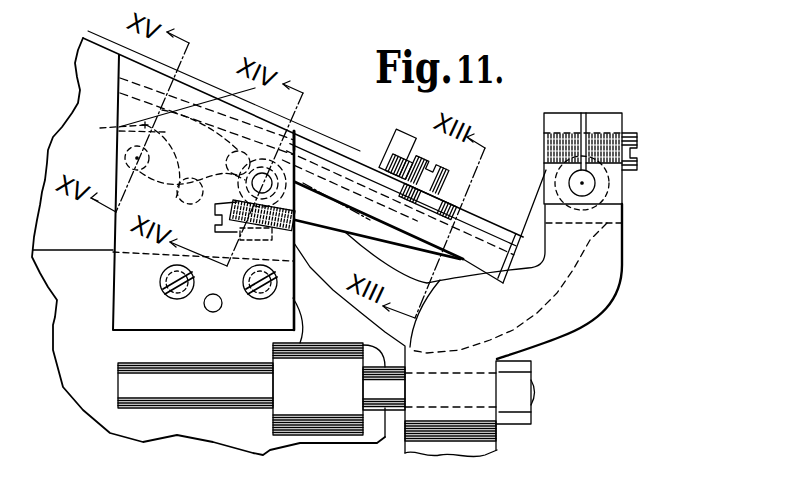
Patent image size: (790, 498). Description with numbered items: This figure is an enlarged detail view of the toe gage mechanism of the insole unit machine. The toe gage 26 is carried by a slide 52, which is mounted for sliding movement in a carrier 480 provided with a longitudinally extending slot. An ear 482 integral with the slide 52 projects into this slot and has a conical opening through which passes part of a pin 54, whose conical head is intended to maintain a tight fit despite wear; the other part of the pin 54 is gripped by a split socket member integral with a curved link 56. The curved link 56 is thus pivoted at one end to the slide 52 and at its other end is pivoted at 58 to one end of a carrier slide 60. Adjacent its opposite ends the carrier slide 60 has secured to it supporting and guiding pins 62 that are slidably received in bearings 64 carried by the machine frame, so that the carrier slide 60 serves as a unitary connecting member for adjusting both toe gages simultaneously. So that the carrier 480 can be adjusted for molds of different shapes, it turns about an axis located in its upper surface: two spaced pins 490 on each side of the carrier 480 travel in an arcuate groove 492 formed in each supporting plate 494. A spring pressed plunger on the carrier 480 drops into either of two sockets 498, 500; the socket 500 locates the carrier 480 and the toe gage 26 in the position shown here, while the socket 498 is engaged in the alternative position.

The toe gage 26 is at (398, 142).
The slide 52 is at (356, 165).
The pin 54 is at (297, 142).
The curved link 56 is at (336, 272).
The pivot 58 is at (588, 187).
The carrier slide 60 is at (588, 306).
The supporting and guiding pin 62 is at (212, 390).
The bearing 64 is at (327, 406).
The carrier 480 is at (375, 212).
The ear 482 is at (312, 188).
The spaced pins 490 is at (236, 163).
The arcuate groove 492 is at (186, 196).
The supporting plate 494 is at (237, 320).
The socket 498 is at (233, 216).
The socket 500 is at (125, 158).